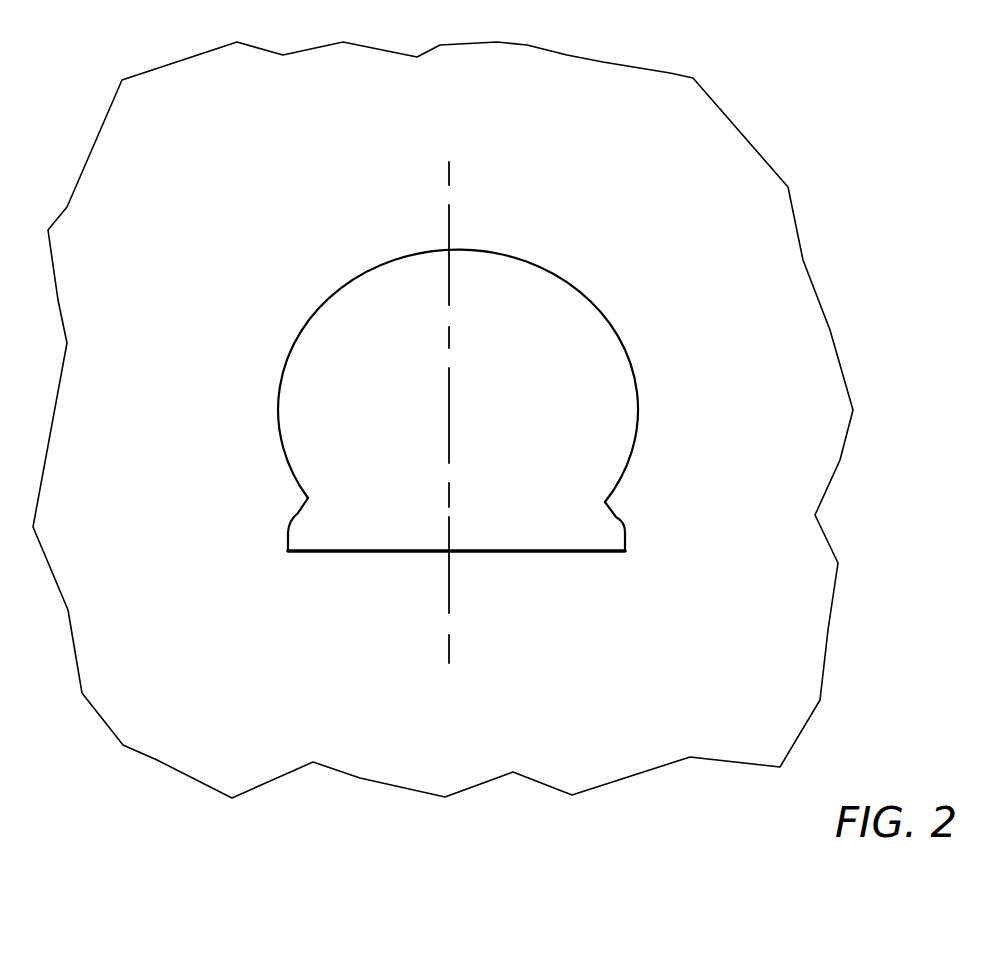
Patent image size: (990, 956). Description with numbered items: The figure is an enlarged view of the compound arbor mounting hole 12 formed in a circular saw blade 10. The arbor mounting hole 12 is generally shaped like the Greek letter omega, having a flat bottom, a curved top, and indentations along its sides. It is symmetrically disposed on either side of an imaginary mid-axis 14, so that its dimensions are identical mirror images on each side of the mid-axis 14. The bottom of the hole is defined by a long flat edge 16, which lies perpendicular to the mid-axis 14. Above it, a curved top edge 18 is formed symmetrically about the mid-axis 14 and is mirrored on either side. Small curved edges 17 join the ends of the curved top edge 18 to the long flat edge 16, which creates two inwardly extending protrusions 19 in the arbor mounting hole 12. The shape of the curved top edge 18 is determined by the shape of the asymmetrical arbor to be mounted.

The circular saw blade 10 is at (750, 228).
The arbor mounting hole 12 is at (541, 433).
The mid-axis 14 is at (448, 280).
The long flat edge 16 is at (456, 583).
The small curved edges 17 is at (287, 533).
The curved top edge 18 is at (280, 430).
The inwardly extending protrusions 19 is at (305, 500).